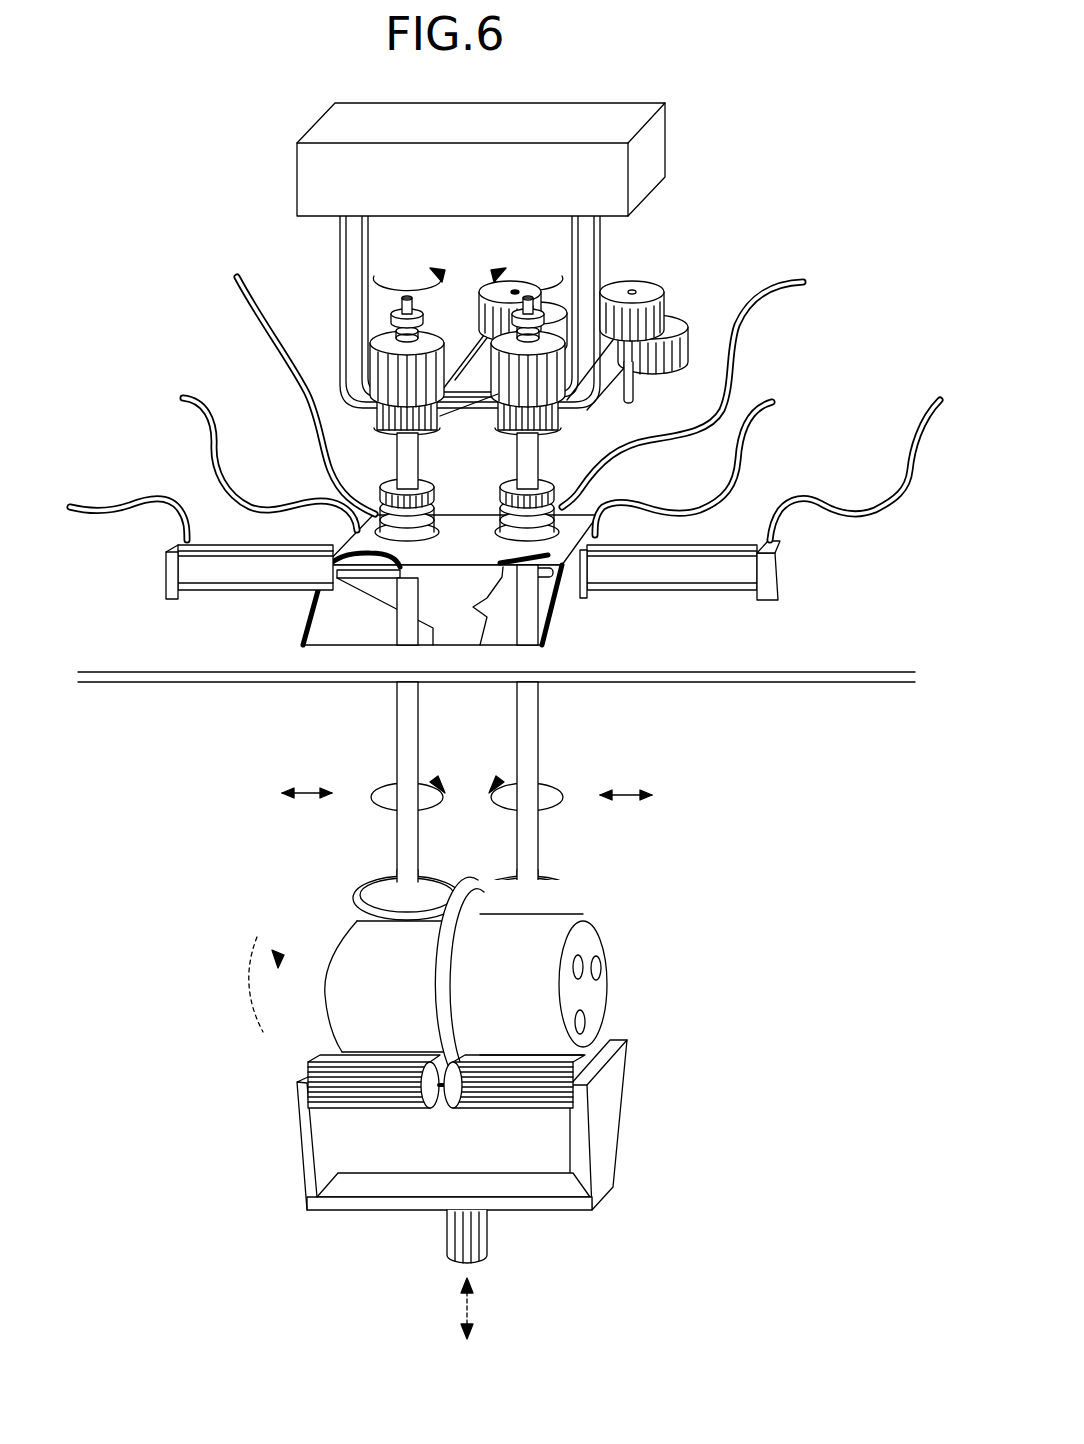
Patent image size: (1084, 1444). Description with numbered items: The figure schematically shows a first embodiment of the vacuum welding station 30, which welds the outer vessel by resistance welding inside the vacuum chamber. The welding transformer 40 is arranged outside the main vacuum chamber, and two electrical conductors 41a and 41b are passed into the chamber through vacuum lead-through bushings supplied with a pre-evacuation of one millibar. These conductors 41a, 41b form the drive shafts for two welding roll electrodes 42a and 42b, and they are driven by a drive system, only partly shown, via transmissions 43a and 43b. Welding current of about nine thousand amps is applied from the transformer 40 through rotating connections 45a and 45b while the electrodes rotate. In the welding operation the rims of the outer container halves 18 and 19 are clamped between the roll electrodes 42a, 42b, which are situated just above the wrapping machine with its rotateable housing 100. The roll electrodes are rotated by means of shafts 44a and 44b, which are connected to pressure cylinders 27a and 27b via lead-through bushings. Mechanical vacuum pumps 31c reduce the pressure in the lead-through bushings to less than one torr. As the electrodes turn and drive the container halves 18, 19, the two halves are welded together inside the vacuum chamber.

The welding transformer 40 is at (598, 127).
The transmission 43b is at (465, 282).
The transmission 43a is at (613, 357).
The rotating connection 45b is at (392, 378).
The rotating connection 45a is at (547, 375).
The electrical conductor 41b is at (407, 473).
The electrical conductor 41a is at (523, 463).
The shaft 44b is at (367, 578).
The shaft 44a is at (557, 583).
The pressure cylinder 27b is at (202, 568).
The pressure cylinder 27a is at (708, 575).
The mechanical vacuum pump 31c is at (227, 278).
The welding roll electrode 42b is at (388, 905).
The welding roll electrode 42a is at (545, 897).
The outer container half 18 is at (362, 998).
The outer container half 19 is at (543, 993).
The rotateable housing 100 is at (603, 1118).
The welding station 30 is at (740, 878).